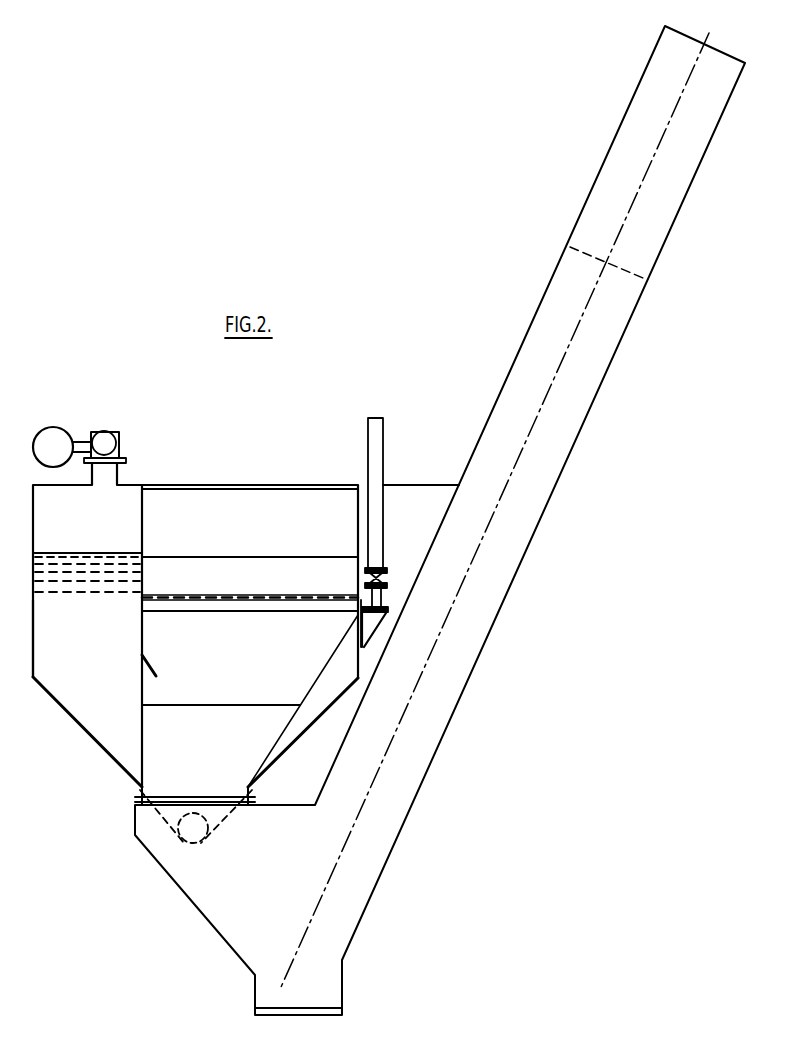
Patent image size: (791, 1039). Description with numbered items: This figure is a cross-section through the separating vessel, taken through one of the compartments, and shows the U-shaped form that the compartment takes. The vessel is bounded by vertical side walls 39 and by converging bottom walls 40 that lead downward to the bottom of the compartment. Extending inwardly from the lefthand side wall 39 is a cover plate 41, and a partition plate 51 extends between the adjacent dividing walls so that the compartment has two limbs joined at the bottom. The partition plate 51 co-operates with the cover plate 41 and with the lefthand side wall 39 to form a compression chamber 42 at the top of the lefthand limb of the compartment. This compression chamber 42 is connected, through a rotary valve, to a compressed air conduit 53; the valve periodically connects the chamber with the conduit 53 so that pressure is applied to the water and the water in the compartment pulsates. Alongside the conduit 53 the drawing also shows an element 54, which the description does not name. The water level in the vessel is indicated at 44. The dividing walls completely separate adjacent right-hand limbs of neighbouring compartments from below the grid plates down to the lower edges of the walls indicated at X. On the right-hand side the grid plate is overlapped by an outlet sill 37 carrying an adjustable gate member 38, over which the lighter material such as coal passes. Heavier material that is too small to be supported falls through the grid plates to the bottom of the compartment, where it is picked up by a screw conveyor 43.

The outlet sill 37 is at (245, 557).
The adjustable gate member 38 is at (268, 595).
The vertical side wall 39 is at (36, 610).
The converging bottom wall 40 is at (98, 748).
The cover plate 41 is at (71, 487).
The compression chamber 42 is at (87, 519).
The screw conveyor 43 is at (186, 826).
The water level 44 is at (107, 553).
The partition plate 51 is at (150, 662).
The compressed air conduit 53 is at (53, 427).
The pump 54 is at (112, 430).
The lower edges of the walls X is at (180, 787).